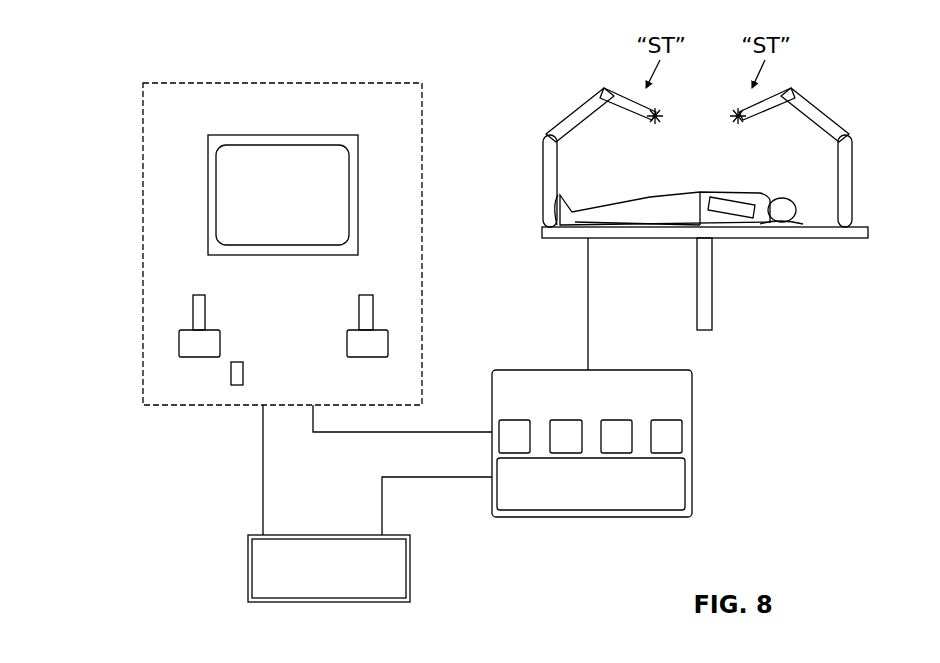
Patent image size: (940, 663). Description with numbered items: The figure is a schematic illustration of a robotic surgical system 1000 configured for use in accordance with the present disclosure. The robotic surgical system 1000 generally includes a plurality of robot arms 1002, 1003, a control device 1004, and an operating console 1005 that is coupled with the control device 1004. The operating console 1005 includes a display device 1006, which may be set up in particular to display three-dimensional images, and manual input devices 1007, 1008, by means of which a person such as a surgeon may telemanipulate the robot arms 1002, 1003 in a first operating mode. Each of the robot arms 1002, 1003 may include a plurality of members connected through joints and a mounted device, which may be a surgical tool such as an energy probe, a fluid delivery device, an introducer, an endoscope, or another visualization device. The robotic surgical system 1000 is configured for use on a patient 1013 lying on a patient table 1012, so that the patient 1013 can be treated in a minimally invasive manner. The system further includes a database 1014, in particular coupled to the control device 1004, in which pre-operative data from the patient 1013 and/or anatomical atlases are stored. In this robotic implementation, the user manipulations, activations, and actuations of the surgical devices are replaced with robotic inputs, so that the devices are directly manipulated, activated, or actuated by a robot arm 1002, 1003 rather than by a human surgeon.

The robotic surgical system 1000 is at (785, 338).
The robot arm 1002 is at (563, 105).
The robot arm 1003 is at (842, 108).
The control device 1004 is at (592, 443).
The operating console 1005 is at (201, 66).
The display device 1006 is at (283, 195).
The manual input device 1007 is at (179, 344).
The manual input device 1008 is at (388, 344).
The patient table 1012 is at (628, 240).
The patient 1013 is at (735, 217).
The database 1014 is at (329, 568).